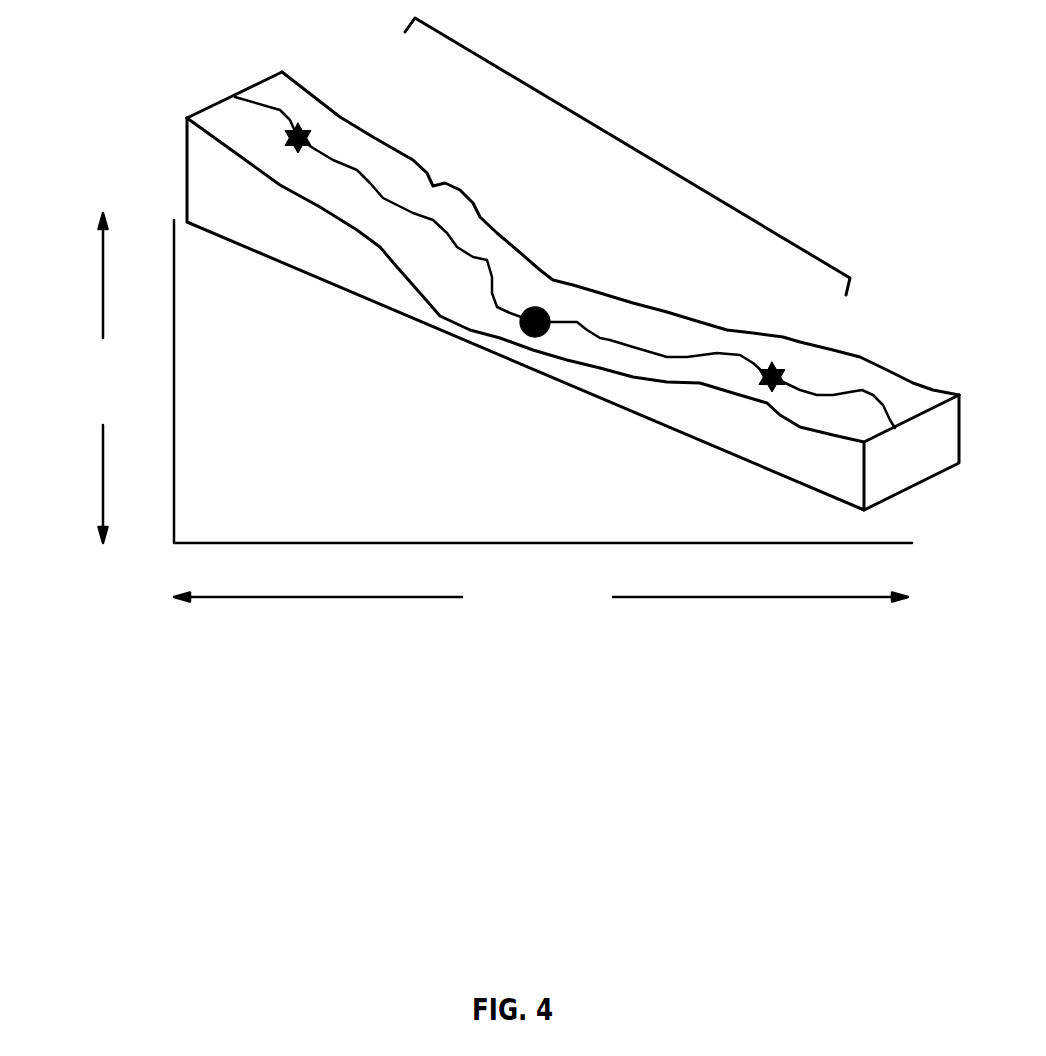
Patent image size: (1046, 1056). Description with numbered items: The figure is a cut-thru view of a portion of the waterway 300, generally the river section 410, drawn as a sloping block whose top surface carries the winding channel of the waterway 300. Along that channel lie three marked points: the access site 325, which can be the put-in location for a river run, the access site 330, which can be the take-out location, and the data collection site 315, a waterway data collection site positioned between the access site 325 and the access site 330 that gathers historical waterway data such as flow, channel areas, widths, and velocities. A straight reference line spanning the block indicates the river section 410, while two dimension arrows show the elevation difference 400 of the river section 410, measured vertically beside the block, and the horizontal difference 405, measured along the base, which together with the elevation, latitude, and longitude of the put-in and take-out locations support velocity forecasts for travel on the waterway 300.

The waterway section 300 is at (383, 198).
The data collection site 315 is at (545, 312).
The access site 325 is at (310, 137).
The access site 330 is at (781, 368).
The elevation difference 400 is at (117, 417).
The horizontal difference 405 is at (523, 631).
The river section 410 is at (635, 147).